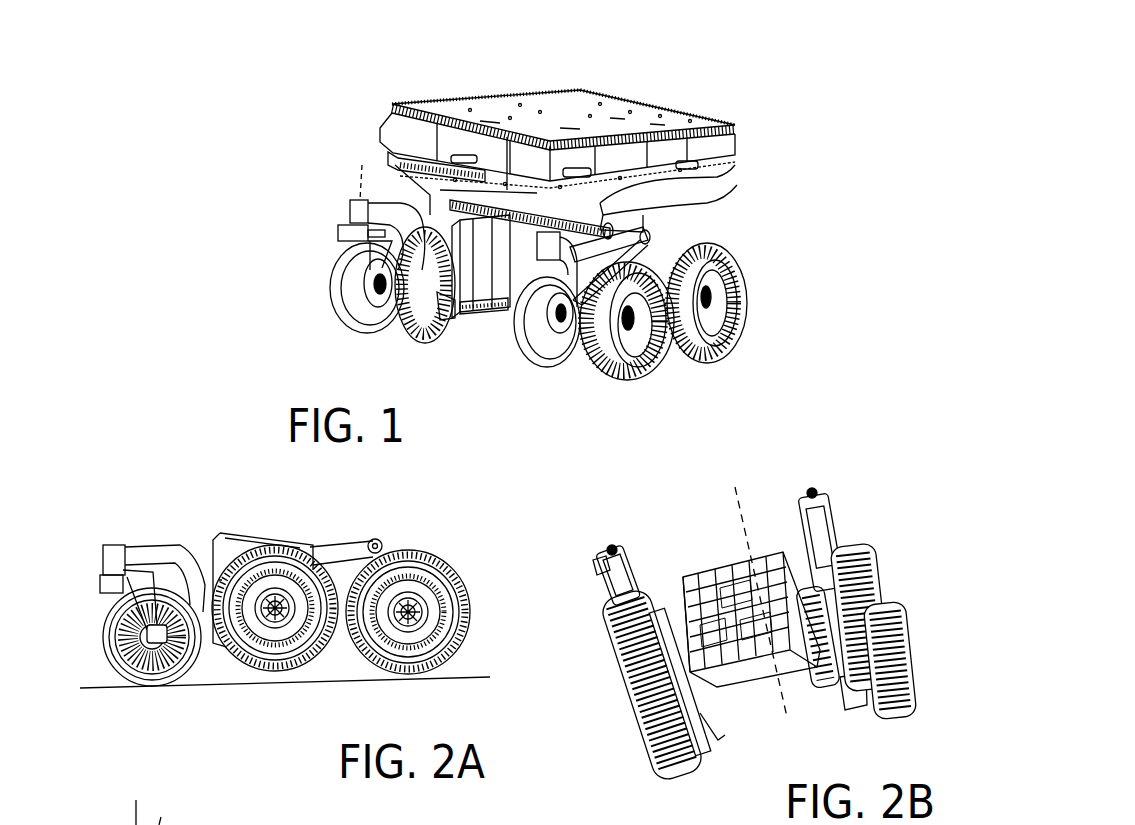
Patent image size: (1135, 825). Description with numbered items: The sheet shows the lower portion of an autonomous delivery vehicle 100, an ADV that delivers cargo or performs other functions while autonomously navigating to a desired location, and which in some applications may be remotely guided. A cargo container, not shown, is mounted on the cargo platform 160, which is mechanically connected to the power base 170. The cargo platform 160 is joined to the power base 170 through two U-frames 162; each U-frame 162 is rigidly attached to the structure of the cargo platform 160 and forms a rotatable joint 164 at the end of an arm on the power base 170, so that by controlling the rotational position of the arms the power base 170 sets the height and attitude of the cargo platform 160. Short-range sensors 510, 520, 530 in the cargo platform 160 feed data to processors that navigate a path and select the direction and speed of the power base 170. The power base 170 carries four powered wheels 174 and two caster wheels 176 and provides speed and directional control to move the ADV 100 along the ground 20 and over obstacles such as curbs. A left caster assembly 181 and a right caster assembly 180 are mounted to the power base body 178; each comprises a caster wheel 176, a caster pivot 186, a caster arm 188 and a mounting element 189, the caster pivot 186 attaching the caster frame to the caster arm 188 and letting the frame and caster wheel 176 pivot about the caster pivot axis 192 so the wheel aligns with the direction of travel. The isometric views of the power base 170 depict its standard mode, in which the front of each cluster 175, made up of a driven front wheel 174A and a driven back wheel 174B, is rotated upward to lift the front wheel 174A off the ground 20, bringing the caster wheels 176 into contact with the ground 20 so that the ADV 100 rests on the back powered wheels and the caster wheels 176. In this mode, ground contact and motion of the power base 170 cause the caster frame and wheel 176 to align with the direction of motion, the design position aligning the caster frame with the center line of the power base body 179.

In FIG. 1, the autonomous delivery vehicle 100 is at (740, 70).
In FIG. 1, the cargo platform 160 is at (722, 141).
In FIG. 1, the U-frame 162 is at (688, 208).
In FIG. 1, the rotatable joint 164 is at (680, 255).
In FIG. 1, the power base 170 is at (625, 308).
In FIG. 1, the powered wheels 174 is at (787, 223).
In FIG. 2A, the driven front wheel 174A is at (287, 565).
In FIG. 2B, the driven front wheel 174A is at (853, 565).
In FIG. 2A, the driven back wheel 174B is at (425, 575).
In FIG. 2B, the driven back wheel 174B is at (893, 625).
In FIG. 2B, the cluster 175 is at (720, 725).
In FIG. 1, the caster wheel 176 is at (348, 302).
In FIG. 2A, the caster wheel 176 is at (113, 617).
In FIG. 2B, the caster wheel 176 is at (825, 665).
In FIG. 1, the power base body 178 is at (500, 300).
In FIG. 2A, the power base body 178 is at (245, 545).
In FIG. 2B, the power base body 178 is at (748, 548).
In FIG. 2B, the center line of the power base body 179 is at (735, 490).
In FIG. 1, the right caster assembly 180 is at (298, 226).
In FIG. 1, the left caster assembly 181 is at (556, 382).
In FIG. 2A, the left caster assembly 181 is at (127, 510).
In FIG. 2B, the left caster assembly 181 is at (685, 817).
In FIG. 2B, the caster pivot 186 is at (605, 565).
In FIG. 1, the caster arm 188 is at (381, 235).
In FIG. 2A, the caster arm 188 is at (163, 540).
In FIG. 2B, the caster arm 188 is at (625, 565).
In FIG. 1, the mounting element 189 is at (437, 293).
In FIG. 1, the caster pivot axis 192 is at (362, 180).
In FIG. 2A, the ground 20 is at (112, 695).
In FIG. 1, the short-range sensor 510 is at (465, 155).
In FIG. 1, the short-range sensor 520 is at (575, 168).
In FIG. 1, the short-range sensor 530 is at (688, 165).